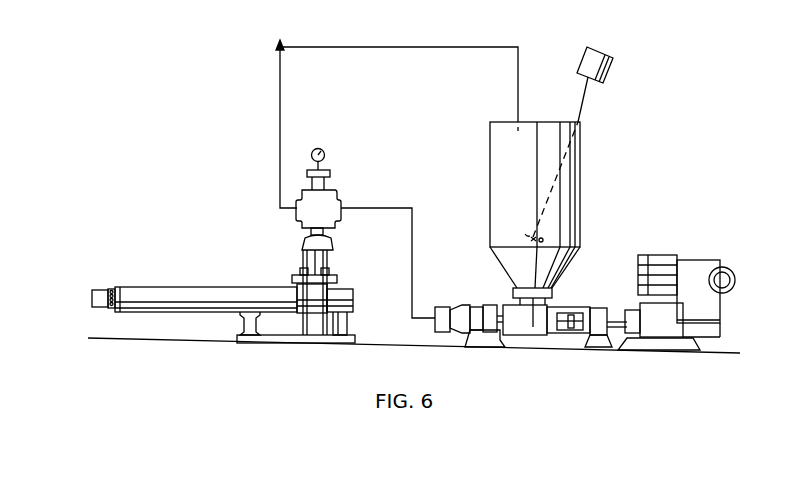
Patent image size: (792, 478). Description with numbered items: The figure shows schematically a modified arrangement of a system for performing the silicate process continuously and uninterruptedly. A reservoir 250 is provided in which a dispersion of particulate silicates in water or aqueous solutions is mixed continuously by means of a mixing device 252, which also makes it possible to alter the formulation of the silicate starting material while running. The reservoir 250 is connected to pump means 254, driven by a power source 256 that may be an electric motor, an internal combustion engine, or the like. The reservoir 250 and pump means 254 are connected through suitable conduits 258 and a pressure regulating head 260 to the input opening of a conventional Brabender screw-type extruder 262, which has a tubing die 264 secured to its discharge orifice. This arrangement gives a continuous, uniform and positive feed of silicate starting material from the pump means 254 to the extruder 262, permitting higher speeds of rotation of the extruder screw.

The reservoir 250 is at (582, 168).
The mixing device 252 is at (604, 78).
The pump means 254 is at (565, 310).
The power source 256 is at (720, 266).
The conduits 258 is at (380, 208).
The pressure regulating head 260 is at (325, 200).
The screw-type extruder 262 is at (203, 290).
The tubing die 264 is at (101, 290).